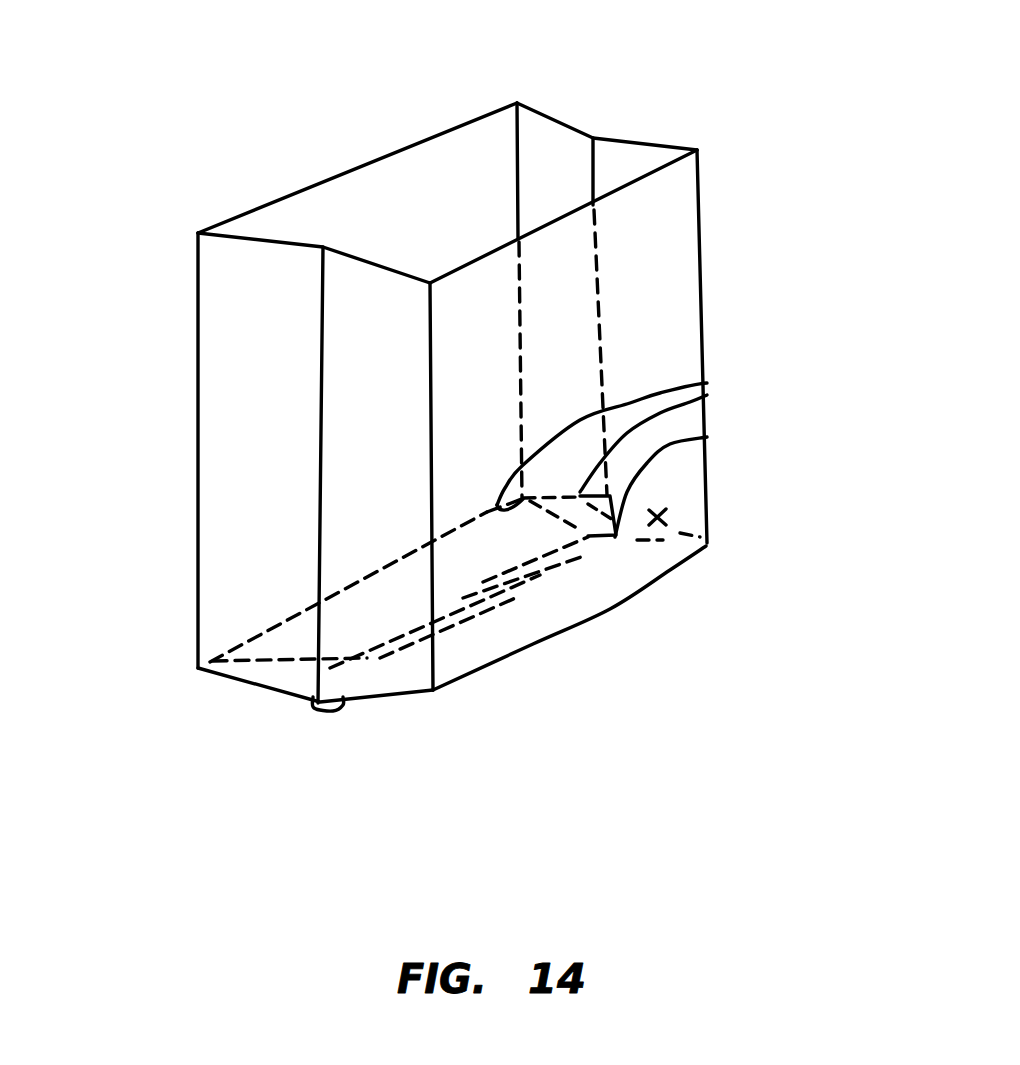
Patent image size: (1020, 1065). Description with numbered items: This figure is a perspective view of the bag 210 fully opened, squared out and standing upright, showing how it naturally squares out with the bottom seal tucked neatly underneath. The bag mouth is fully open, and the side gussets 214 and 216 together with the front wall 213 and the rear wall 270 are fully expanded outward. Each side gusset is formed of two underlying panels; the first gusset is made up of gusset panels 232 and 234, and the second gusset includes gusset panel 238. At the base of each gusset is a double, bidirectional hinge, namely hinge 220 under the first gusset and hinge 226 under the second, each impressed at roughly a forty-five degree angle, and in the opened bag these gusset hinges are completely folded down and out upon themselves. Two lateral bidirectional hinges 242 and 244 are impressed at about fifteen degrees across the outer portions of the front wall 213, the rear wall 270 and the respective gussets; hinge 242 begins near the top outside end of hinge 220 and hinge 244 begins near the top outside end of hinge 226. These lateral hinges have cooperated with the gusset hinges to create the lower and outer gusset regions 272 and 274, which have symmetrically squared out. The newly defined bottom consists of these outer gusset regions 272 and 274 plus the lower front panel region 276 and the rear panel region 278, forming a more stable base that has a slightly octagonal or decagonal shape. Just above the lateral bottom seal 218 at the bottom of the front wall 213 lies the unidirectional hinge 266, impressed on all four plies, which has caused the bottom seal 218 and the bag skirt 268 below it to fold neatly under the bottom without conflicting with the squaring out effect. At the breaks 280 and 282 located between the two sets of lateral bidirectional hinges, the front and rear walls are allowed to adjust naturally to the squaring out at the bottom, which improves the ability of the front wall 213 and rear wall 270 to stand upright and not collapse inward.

The bag 210 is at (714, 239).
The front wall 213 is at (660, 340).
The side gusset 214 is at (362, 305).
The side gusset 216 is at (548, 137).
The lateral bottom seal 218 is at (337, 703).
The double, bidirectional hinge 220 is at (280, 642).
The double, bidirectional hinge 226 is at (707, 437).
The gusset panel 232 is at (230, 400).
The gusset panel 234 is at (363, 432).
The gusset panel 238 is at (555, 180).
The lateral bidirectional hinge 242 is at (213, 658).
The lateral bidirectional hinge 244 is at (707, 383).
The unidirectional hinge 266 is at (470, 592).
The bag skirt 268 is at (505, 587).
The rear wall 270 is at (413, 167).
The lower and outer gusset region 272 is at (267, 677).
The lower and outer gusset region 274 is at (640, 525).
The lower front panel region 276 is at (573, 597).
The rear panel region 278 is at (410, 580).
The break 280 is at (580, 623).
The break 282 is at (390, 545).